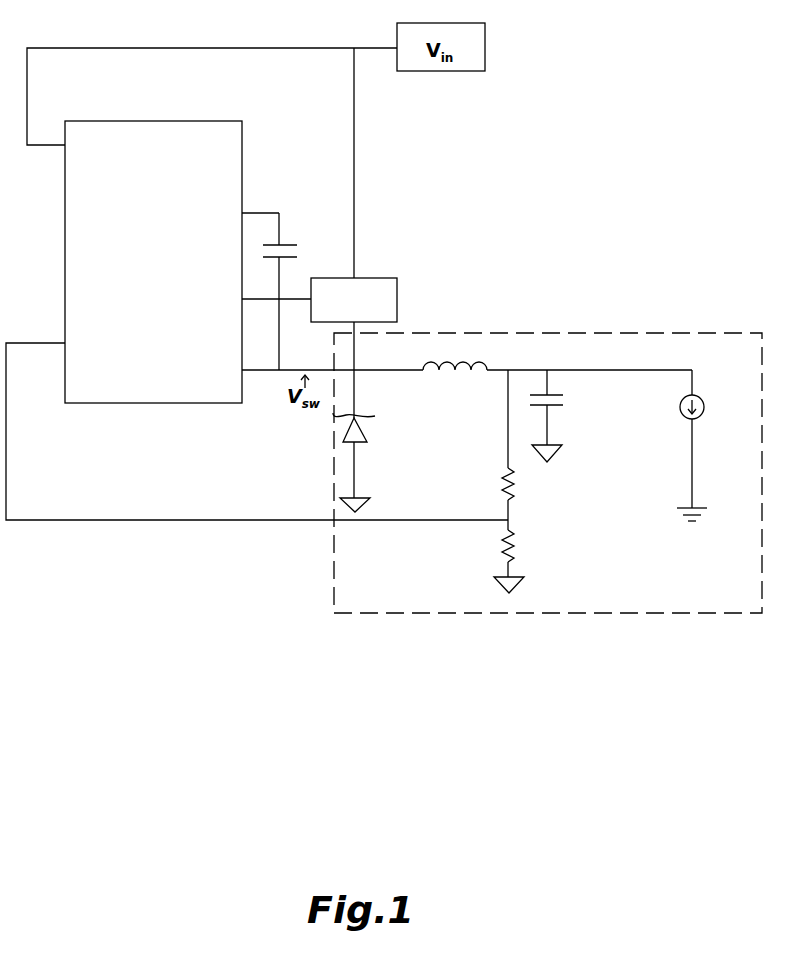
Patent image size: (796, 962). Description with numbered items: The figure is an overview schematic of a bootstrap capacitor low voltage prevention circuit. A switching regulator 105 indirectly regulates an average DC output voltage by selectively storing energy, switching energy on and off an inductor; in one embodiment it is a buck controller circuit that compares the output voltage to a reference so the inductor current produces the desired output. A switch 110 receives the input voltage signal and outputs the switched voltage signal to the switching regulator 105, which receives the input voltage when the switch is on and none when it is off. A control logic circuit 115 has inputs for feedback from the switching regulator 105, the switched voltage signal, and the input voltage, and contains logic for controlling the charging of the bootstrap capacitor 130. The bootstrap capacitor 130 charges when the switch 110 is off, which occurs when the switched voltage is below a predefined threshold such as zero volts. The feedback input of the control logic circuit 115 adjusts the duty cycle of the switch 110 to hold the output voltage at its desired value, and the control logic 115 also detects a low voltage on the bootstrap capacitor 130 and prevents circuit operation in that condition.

The switching regulator 105 is at (590, 334).
The switch 110 is at (397, 286).
The control logic circuit 115 is at (242, 168).
The bootstrap capacitor CBcap 130 is at (314, 244).